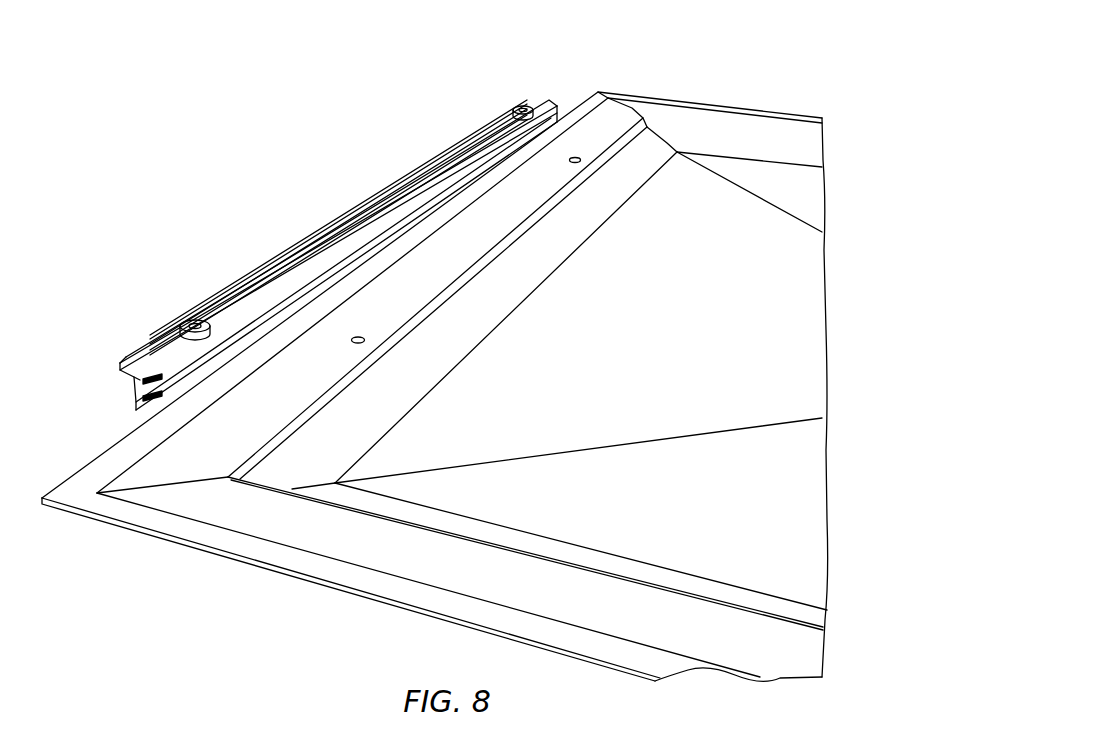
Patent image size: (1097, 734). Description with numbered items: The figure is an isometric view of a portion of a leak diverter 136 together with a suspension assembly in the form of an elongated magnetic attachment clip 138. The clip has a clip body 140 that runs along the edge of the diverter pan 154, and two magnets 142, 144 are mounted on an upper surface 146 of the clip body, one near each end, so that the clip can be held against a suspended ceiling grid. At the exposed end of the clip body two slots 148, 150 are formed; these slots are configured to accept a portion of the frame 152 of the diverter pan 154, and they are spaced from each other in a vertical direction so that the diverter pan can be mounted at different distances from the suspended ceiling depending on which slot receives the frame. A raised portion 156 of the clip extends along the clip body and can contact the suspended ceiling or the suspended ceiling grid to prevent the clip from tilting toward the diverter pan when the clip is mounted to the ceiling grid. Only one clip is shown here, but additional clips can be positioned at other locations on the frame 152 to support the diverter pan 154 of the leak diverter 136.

The leak diverter 136 is at (762, 92).
The elongated magnetic attachment clip 138 is at (303, 212).
The clip body 140 is at (268, 290).
The magnet 142 is at (190, 321).
The magnet 144 is at (505, 117).
The upper surface 146 is at (455, 163).
The slot 148 is at (150, 381).
The slot 150 is at (152, 398).
The frame 152 is at (162, 522).
The diverter pan 154 is at (707, 549).
The raised portion 156 is at (400, 178).